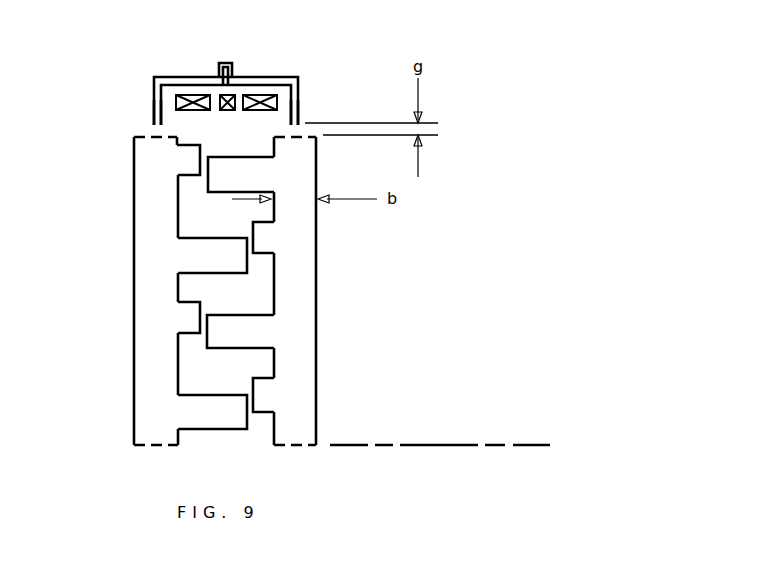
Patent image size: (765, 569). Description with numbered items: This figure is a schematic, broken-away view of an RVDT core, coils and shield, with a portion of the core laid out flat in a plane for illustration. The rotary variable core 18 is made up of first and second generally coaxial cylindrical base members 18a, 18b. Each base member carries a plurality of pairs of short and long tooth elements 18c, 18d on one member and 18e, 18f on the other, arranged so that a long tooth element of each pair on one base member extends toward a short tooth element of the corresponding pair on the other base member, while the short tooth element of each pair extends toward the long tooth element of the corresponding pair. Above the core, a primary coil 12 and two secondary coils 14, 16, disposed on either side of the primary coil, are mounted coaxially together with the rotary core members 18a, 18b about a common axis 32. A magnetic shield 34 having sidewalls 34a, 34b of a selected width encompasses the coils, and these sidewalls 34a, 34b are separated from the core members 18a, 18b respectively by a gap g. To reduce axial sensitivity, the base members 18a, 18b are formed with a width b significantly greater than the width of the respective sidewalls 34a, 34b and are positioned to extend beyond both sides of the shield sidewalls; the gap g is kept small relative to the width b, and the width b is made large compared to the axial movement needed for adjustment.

The primary coil 12 is at (227, 96).
The secondary coil 14 is at (202, 95).
The secondary coil 16 is at (261, 95).
The rotary variable core 18 is at (117, 217).
The first base member 18a is at (157, 378).
The second base member 18b is at (300, 420).
The short tooth element 18c is at (188, 162).
The long tooth element 18d is at (207, 257).
The short tooth element 18e is at (263, 235).
The long tooth element 18f is at (242, 173).
The axis 32 is at (442, 445).
The magnetic shield 34 is at (150, 76).
The shield sidewall 34a is at (158, 107).
The shield sidewall 34b is at (295, 103).